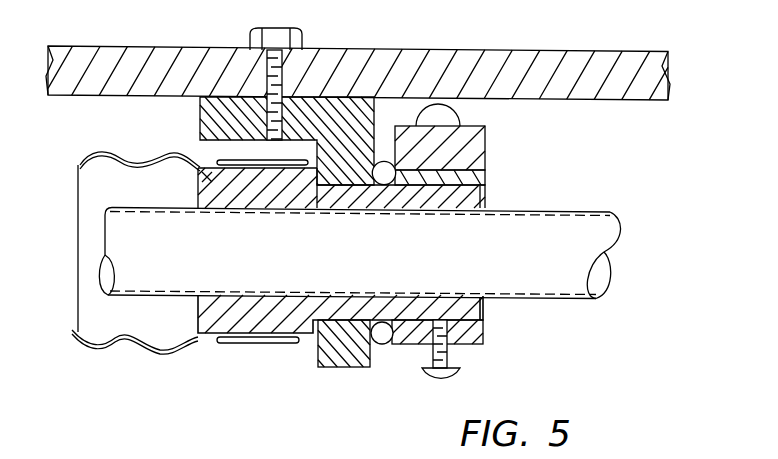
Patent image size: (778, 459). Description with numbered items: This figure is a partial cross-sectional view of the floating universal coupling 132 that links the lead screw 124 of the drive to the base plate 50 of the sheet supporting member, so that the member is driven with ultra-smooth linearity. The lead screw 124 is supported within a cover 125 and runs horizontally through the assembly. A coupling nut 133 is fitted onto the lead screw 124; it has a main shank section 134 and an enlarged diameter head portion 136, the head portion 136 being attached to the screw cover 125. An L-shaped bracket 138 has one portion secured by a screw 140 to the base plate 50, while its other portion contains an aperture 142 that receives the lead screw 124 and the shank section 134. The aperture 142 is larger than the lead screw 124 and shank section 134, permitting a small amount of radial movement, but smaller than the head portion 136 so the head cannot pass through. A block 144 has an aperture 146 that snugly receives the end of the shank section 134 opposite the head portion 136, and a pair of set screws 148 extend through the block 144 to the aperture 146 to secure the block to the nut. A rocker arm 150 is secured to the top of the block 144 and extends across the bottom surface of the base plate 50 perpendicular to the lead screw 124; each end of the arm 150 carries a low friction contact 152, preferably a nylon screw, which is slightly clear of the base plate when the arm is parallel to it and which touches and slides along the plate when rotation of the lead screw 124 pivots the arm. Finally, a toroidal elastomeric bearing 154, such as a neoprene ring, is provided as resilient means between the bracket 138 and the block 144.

The base plate 50 is at (592, 52).
The lead screw 124 is at (168, 206).
The cover 125 is at (98, 160).
The floating universal coupling 132 is at (240, 358).
The coupling nut 133 is at (207, 177).
The main shank section 134 is at (485, 195).
The head portion 136 is at (198, 310).
The L-shaped bracket 138 is at (343, 105).
The screw 140 is at (278, 29).
The aperture 142 is at (346, 322).
The block 144 is at (483, 332).
The aperture 146 is at (447, 326).
The set screws 148 is at (455, 381).
The rocker arm 150 is at (485, 145).
The low friction contact 152 is at (457, 112).
The elastomeric bearing 154 is at (380, 162).